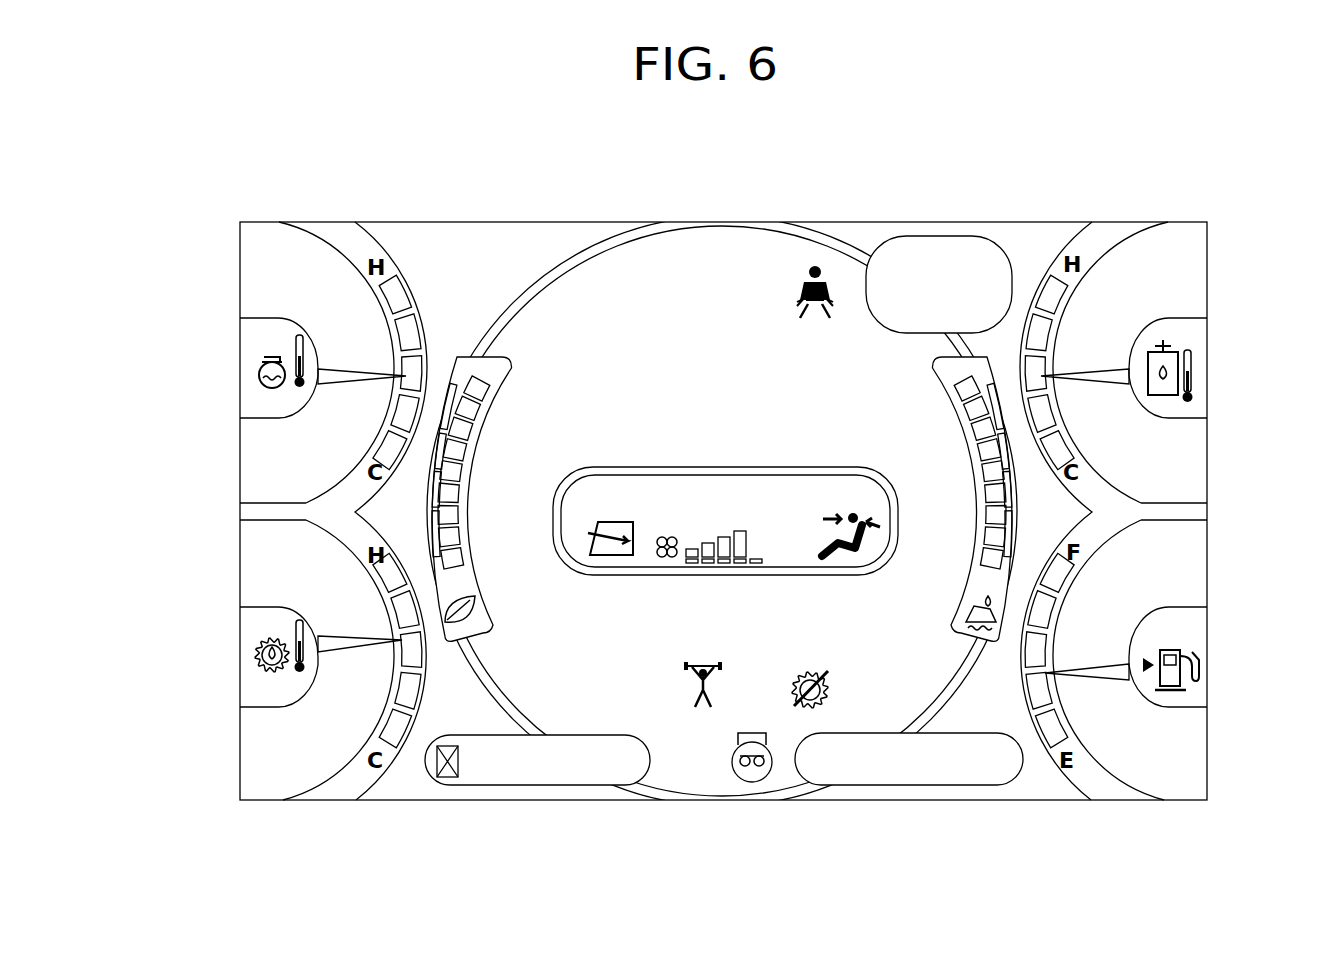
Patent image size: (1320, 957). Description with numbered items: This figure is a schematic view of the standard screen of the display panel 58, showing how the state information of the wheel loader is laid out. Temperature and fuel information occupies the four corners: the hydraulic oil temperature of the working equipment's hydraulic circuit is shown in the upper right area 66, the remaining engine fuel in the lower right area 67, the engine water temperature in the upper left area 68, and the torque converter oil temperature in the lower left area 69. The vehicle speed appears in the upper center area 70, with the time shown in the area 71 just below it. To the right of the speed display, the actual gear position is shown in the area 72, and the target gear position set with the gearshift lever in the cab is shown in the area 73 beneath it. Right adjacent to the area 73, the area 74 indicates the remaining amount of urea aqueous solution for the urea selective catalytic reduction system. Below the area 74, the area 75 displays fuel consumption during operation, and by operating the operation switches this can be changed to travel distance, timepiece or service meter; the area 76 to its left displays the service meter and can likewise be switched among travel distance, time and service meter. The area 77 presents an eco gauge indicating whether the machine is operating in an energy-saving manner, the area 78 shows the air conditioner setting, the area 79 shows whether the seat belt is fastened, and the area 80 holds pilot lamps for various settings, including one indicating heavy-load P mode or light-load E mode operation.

The display panel 58 is at (1140, 222).
The upper right area 66 is at (1183, 332).
The lower right area 67 is at (1185, 623).
The upper left area 68 is at (262, 336).
The lower left area 69 is at (262, 632).
The upper center area 70 is at (678, 275).
The time display area 71 is at (755, 386).
The actual gear position area 72 is at (937, 236).
The target gear position area 73 is at (890, 355).
The urea aqueous solution remaining amount area 74 is at (1020, 490).
The fuel consumption area 75 is at (932, 787).
The service meter area 76 is at (530, 787).
The eco gauge area 77 is at (464, 492).
The air conditioner setting area 78 is at (833, 467).
The seat belt display area 79 is at (817, 265).
The pilot lamp area 80 is at (815, 670).